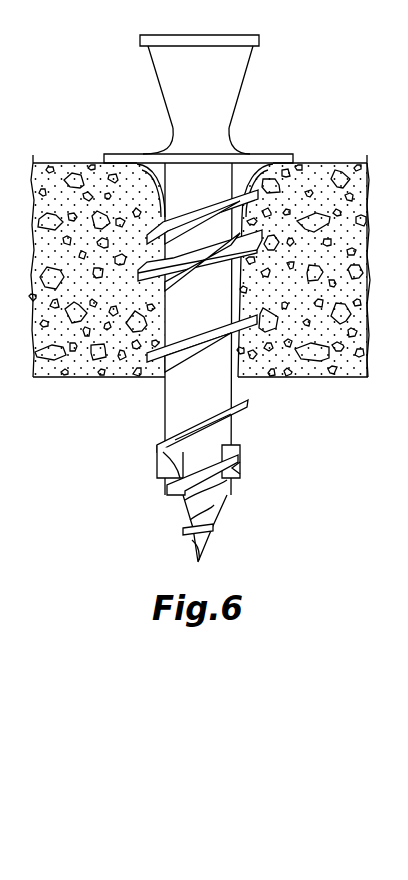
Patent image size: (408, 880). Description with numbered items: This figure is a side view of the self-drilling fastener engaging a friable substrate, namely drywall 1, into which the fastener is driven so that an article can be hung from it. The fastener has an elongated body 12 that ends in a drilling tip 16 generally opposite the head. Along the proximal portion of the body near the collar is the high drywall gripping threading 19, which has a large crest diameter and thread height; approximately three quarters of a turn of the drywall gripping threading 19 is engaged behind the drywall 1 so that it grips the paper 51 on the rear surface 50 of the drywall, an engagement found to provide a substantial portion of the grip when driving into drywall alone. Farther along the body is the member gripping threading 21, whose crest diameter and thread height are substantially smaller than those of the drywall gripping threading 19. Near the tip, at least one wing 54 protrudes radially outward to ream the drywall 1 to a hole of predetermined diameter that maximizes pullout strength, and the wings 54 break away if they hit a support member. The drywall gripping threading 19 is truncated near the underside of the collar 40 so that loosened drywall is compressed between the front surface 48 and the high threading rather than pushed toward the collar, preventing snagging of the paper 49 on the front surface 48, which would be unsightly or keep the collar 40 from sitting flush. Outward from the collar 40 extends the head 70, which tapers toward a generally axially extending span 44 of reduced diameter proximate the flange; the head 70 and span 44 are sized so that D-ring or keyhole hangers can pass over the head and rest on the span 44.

The drywall 1 is at (321, 167).
The elongated body 12 is at (226, 284).
The drilling tip 16 is at (209, 543).
The drywall gripping threading 19 is at (138, 276).
The member gripping threading 21 is at (252, 401).
The collar 40 is at (125, 153).
The span 44 is at (232, 133).
The front surface 48 is at (354, 150).
The paper 49 is at (48, 162).
The rear surface 50 is at (50, 387).
The paper 51 is at (83, 378).
The wing 54 is at (157, 466).
The head 70 is at (153, 70).